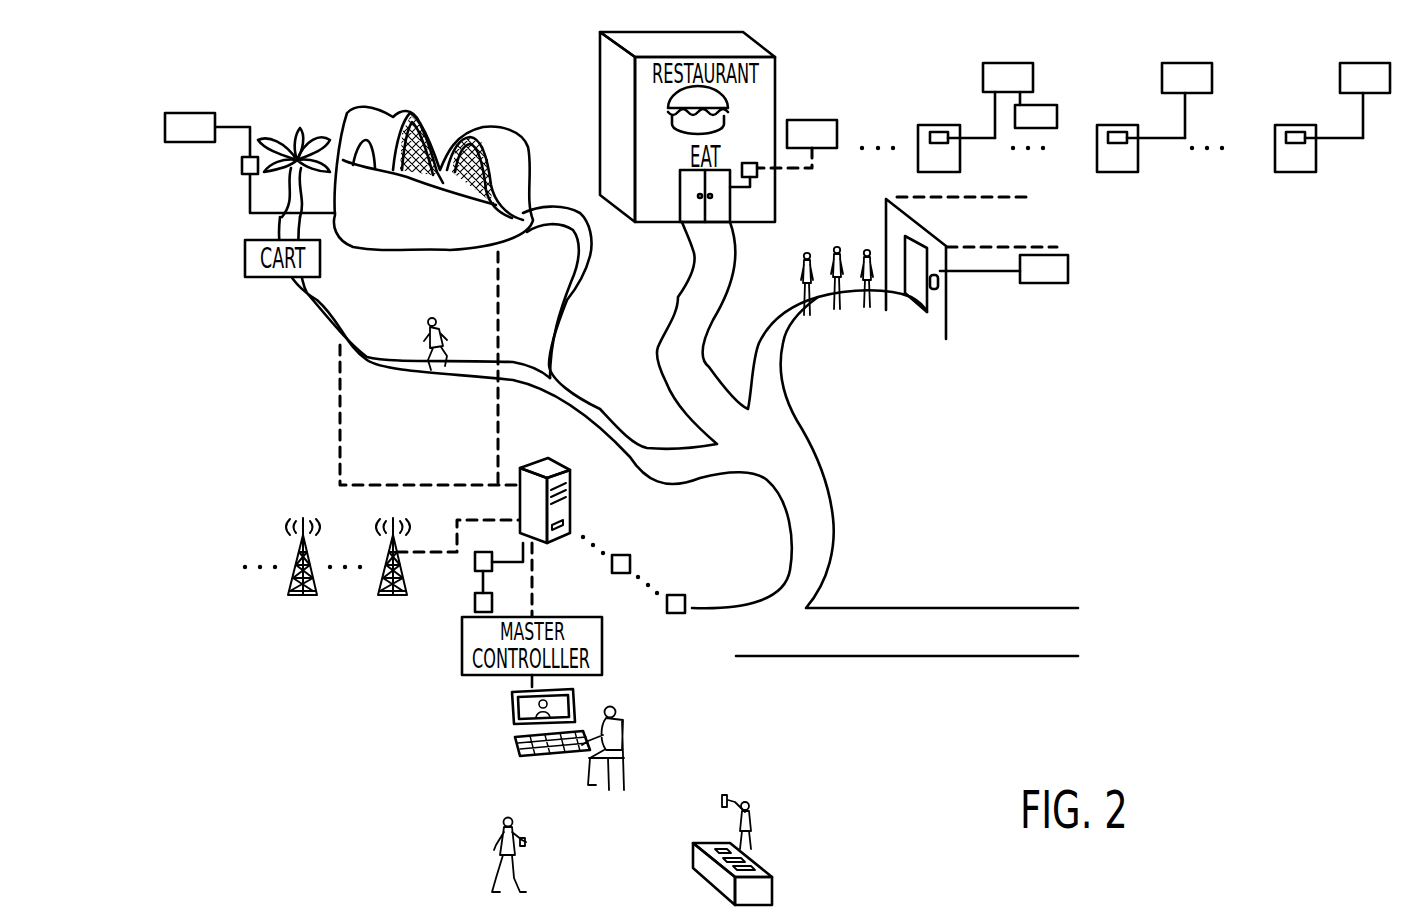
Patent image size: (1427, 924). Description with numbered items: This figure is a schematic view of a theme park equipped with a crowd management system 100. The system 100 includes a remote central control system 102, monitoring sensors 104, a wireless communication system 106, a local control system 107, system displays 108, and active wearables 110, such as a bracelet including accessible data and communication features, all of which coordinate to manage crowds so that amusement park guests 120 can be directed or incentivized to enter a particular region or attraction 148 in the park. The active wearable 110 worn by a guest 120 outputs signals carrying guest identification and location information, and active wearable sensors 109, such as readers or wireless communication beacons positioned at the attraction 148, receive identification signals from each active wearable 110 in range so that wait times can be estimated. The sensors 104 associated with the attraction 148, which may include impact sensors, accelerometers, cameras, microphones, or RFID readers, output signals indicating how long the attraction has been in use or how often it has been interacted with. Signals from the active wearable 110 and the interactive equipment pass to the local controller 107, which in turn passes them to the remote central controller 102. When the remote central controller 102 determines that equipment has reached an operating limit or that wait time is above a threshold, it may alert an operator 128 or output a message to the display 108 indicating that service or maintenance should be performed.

The system 100 is at (268, 389).
The remote central control system 102 is at (528, 440).
The monitoring sensors 104 is at (242, 166).
The wireless communication system 106 is at (315, 494).
The local control system 107 is at (190, 113).
The system displays 108 is at (577, 703).
The active wearable sensors 109 is at (1057, 117).
The active wearables 110 is at (525, 845).
The guests 120 is at (427, 333).
The operator 128 is at (558, 778).
The attraction 148 is at (940, 127).